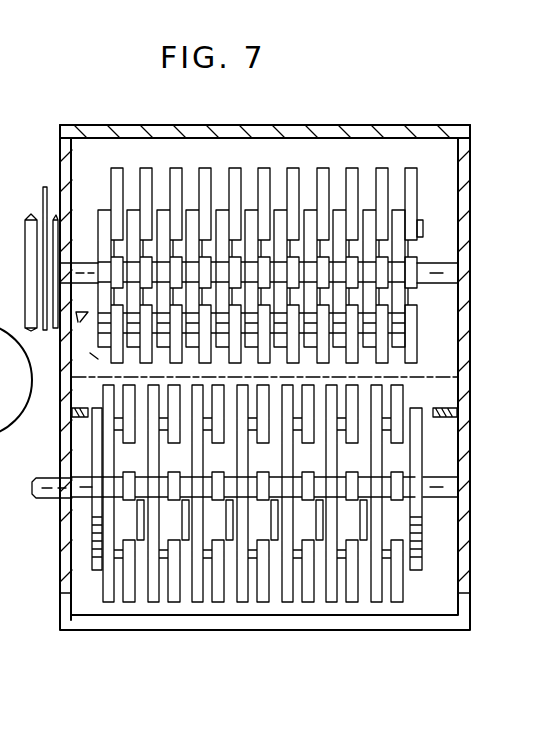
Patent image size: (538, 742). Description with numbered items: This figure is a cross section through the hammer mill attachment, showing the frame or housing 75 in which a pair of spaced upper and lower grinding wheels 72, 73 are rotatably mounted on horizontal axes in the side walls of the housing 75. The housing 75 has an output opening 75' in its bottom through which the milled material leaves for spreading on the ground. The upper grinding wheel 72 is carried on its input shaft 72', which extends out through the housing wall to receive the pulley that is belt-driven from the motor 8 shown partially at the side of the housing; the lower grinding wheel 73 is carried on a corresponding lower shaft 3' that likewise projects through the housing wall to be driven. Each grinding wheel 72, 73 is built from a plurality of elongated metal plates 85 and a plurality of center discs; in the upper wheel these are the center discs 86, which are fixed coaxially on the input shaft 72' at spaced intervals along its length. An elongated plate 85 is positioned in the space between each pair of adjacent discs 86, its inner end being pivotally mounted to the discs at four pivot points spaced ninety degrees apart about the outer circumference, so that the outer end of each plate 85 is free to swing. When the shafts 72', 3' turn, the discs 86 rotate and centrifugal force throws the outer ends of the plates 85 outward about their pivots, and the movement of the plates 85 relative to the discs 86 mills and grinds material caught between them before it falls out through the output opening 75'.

The housing 75 is at (265, 354).
The output opening 75' is at (265, 409).
The upper grinding wheel 72 is at (259, 226).
The input shaft 72' is at (42, 259).
The center disc 86 is at (400, 207).
The elongated metal plate 85 is at (413, 327).
The lower grinding wheel 73 is at (211, 608).
The shaft 3' is at (230, 494).
The motor 8 is at (16, 436).